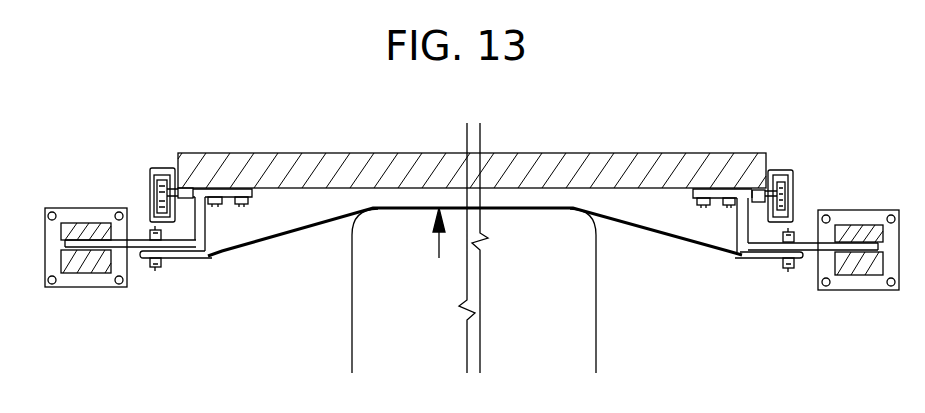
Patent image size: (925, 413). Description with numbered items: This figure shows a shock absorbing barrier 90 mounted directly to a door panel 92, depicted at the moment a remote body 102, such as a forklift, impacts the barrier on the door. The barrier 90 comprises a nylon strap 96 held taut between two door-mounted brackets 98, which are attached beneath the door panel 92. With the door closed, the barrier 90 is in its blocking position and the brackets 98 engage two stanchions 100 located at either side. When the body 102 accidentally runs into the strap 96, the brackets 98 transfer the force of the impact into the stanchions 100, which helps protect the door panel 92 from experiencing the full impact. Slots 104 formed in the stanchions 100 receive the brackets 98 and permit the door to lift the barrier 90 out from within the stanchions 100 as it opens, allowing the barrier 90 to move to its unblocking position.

The shock absorbing barrier 90 is at (753, 262).
The door panel 92 is at (559, 152).
The nylon strap 96 is at (327, 225).
The door-mounted brackets 98 is at (133, 258).
The stanchions 100 is at (87, 273).
The body 102 is at (350, 322).
The slots 104 is at (62, 246).